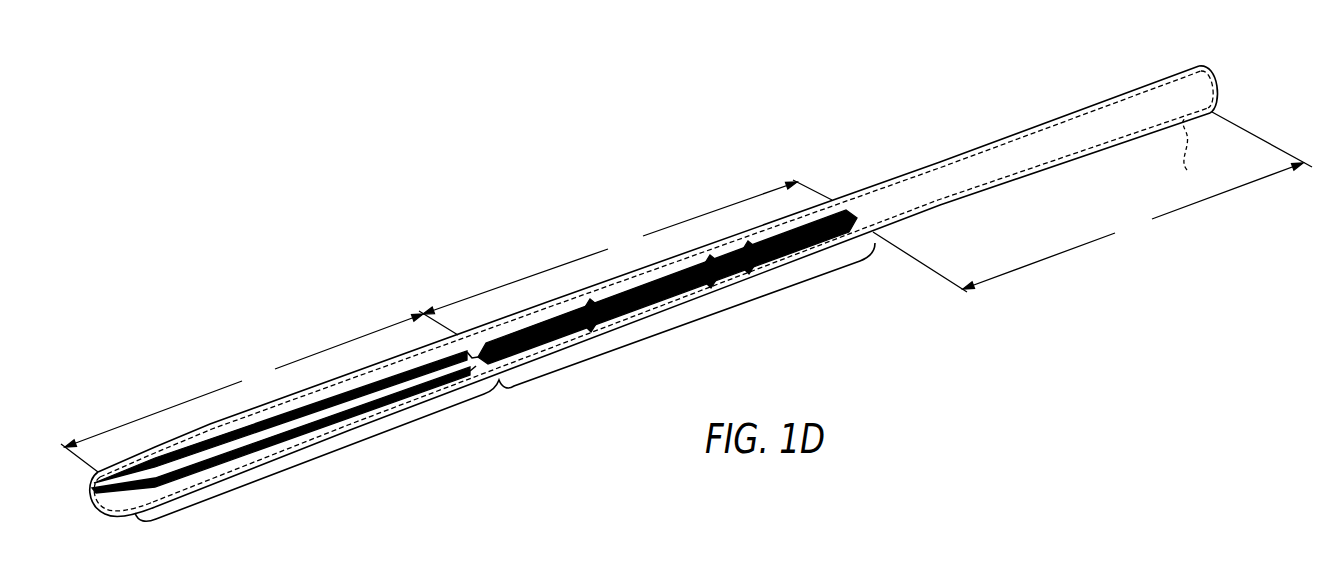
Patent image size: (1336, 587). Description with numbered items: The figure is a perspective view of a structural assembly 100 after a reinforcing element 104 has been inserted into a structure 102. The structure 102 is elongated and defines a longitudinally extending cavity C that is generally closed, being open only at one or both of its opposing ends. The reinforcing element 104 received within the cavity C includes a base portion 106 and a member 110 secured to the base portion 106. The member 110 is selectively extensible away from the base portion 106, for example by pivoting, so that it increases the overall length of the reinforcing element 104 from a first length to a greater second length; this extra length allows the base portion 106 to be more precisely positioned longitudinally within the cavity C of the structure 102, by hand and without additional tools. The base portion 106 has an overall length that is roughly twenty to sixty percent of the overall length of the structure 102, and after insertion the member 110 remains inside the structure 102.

The structural assembly 100 is at (460, 113).
The structure 102 is at (1073, 135).
The reinforcing element 104 is at (502, 361).
The base portion 106 is at (662, 302).
The member 110 is at (273, 440).